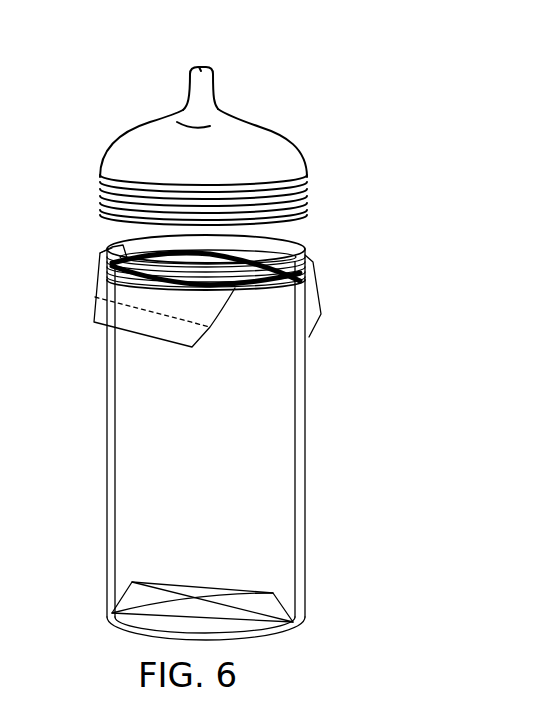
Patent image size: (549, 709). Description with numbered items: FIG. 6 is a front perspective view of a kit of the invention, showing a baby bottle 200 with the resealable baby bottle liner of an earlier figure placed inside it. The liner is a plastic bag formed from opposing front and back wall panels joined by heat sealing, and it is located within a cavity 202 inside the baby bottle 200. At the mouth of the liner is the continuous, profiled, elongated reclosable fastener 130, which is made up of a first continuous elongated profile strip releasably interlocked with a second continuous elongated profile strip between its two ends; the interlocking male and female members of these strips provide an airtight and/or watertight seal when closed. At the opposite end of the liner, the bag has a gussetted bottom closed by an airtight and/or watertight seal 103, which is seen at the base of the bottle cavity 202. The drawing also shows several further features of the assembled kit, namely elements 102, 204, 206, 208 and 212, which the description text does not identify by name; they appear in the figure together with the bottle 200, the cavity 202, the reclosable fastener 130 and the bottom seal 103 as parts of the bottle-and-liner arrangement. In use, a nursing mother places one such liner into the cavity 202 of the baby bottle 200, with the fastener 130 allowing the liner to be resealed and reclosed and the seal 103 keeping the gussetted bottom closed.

The liner bag 102 is at (135, 410).
The airtight and/or watertight seal 103 is at (280, 618).
The reclosable fastener 130 is at (263, 288).
The baby bottle 200 is at (305, 403).
The cavity 202 is at (127, 252).
The container lip 204 is at (120, 246).
The cap threads 206 is at (300, 203).
The cap 208 is at (253, 150).
The liner flap 212 is at (311, 292).